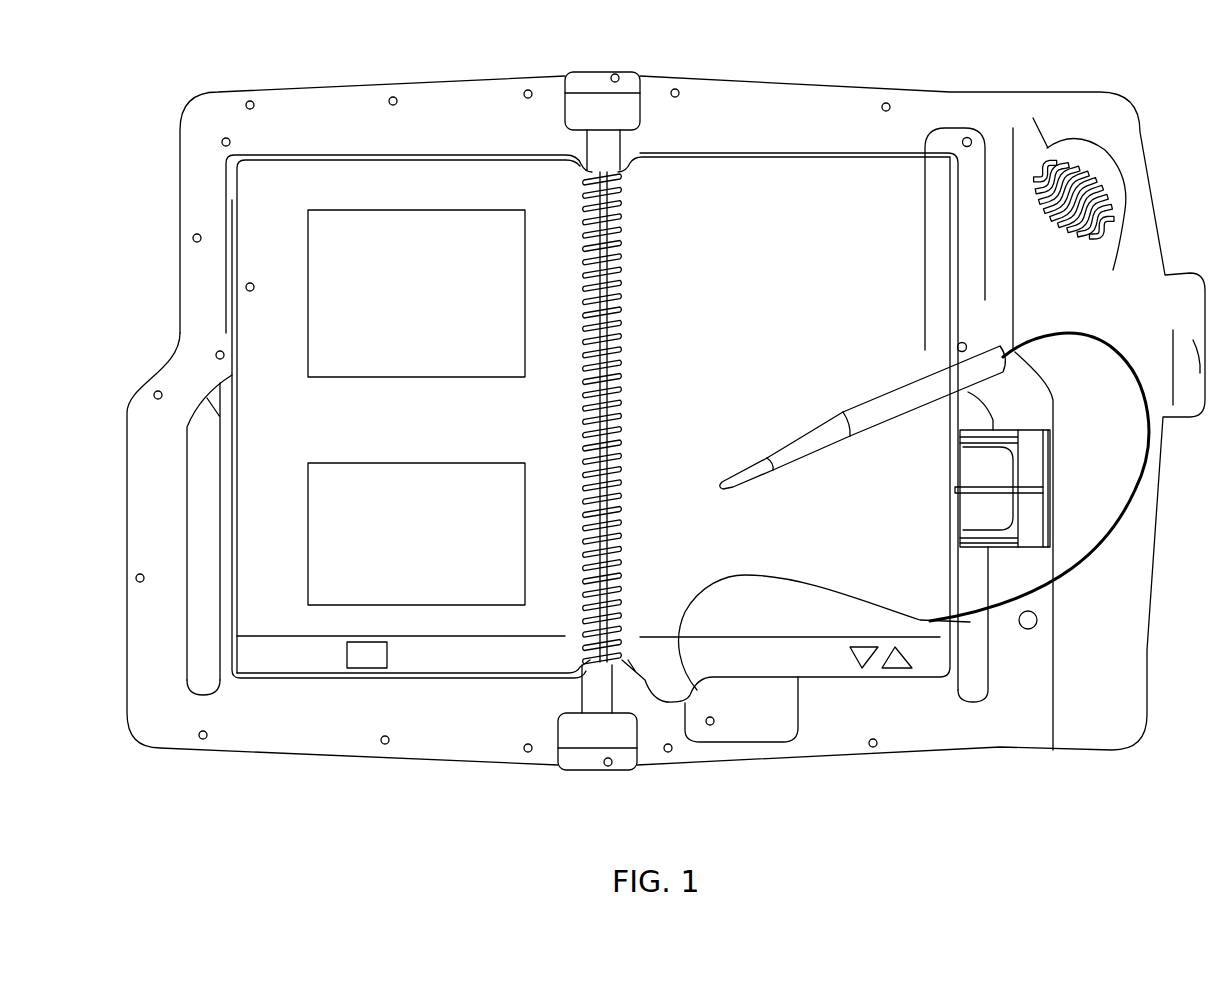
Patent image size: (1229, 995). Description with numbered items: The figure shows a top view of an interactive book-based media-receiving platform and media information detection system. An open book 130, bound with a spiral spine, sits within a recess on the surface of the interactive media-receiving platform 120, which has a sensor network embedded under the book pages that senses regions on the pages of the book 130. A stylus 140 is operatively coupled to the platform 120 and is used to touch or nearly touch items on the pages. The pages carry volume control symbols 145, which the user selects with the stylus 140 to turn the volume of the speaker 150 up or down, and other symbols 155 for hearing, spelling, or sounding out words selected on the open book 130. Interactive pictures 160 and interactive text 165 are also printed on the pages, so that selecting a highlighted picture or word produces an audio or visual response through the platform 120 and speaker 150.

The interactive media-receiving platform 120 is at (320, 137).
The open book 130 is at (878, 232).
The stylus 140 is at (920, 454).
The volume control symbols 145 is at (873, 677).
The speaker 150 is at (1087, 140).
The other symbols 155 is at (378, 682).
The interactive pictures 160 is at (437, 349).
The interactive text 165 is at (437, 592).